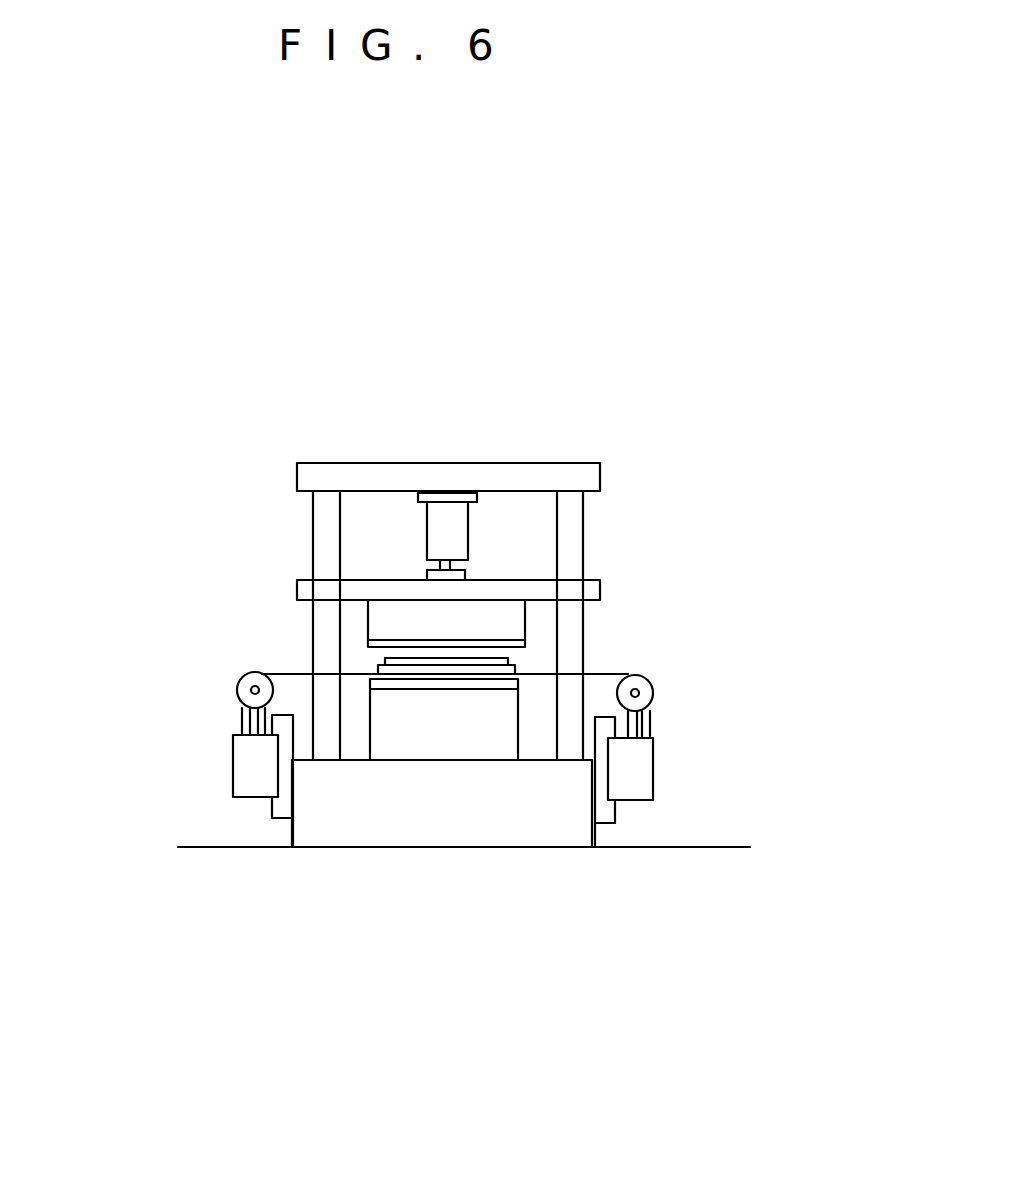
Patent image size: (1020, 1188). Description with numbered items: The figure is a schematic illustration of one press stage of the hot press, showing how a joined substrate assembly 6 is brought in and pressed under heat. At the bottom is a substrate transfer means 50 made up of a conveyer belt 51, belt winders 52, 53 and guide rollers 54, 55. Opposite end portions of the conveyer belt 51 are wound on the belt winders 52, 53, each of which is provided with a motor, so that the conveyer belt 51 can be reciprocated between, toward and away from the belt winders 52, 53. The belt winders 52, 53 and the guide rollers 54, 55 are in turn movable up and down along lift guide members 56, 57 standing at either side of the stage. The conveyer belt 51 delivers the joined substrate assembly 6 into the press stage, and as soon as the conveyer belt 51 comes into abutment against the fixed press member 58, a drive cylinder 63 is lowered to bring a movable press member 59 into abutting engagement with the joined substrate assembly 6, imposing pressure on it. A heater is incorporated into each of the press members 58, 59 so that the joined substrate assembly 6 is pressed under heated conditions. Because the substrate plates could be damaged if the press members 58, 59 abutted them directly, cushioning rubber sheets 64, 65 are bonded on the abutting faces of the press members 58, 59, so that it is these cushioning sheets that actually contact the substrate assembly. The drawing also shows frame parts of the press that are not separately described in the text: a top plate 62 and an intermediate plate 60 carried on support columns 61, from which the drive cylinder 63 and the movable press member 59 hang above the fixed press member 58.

The joined substrate assembly 6 is at (382, 665).
The substrate transfer means 50 is at (643, 670).
The conveyer belt 51 is at (355, 678).
The belt winder 52 is at (654, 692).
The belt winder 53 is at (236, 682).
The guide roller 54 is at (642, 795).
The guide roller 55 is at (238, 757).
The lift guide member 56 is at (600, 815).
The lift guide member 57 is at (270, 805).
The fixed press member 58 is at (443, 737).
The movable press member 59 is at (473, 617).
The intermediate plate 60 is at (303, 582).
The support columns 61 is at (322, 518).
The top plate 62 is at (558, 470).
The drive cylinder 63 is at (447, 517).
The cushioning rubber sheet 64 is at (488, 688).
The cushioning rubber sheet 65 is at (395, 635).